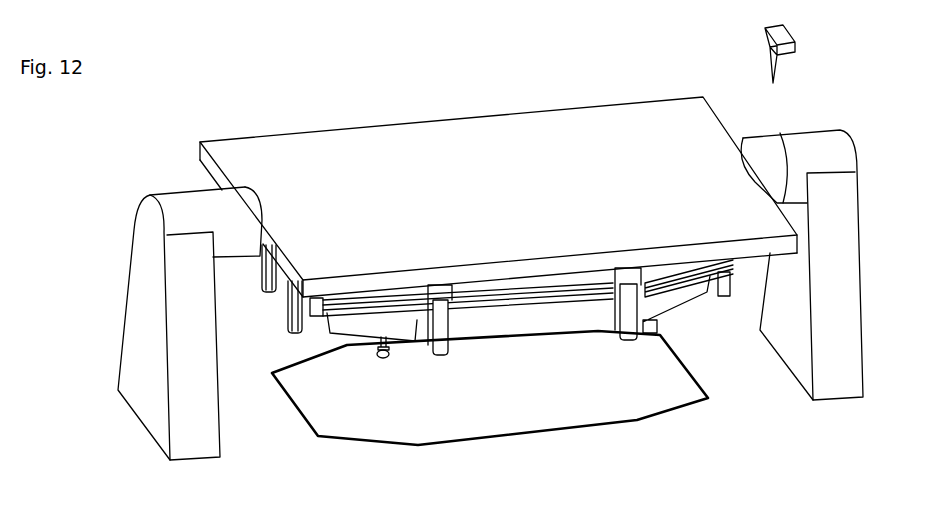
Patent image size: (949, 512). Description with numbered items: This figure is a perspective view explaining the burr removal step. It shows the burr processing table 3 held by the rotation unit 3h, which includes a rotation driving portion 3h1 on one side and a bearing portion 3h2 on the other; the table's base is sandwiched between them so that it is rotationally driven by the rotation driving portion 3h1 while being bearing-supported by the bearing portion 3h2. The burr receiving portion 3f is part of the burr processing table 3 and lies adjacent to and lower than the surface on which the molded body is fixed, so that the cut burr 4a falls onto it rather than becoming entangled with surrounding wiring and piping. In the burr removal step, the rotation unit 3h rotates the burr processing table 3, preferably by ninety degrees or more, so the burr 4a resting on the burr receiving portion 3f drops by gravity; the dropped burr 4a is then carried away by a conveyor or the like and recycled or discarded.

The burr processing table 3 is at (498, 240).
The rotation unit 3h is at (489, 242).
The rotation driving portion 3h1 is at (790, 118).
The bearing portion 3h2 is at (140, 182).
The burr receiving portion 3f is at (527, 302).
The burr 4a is at (663, 417).